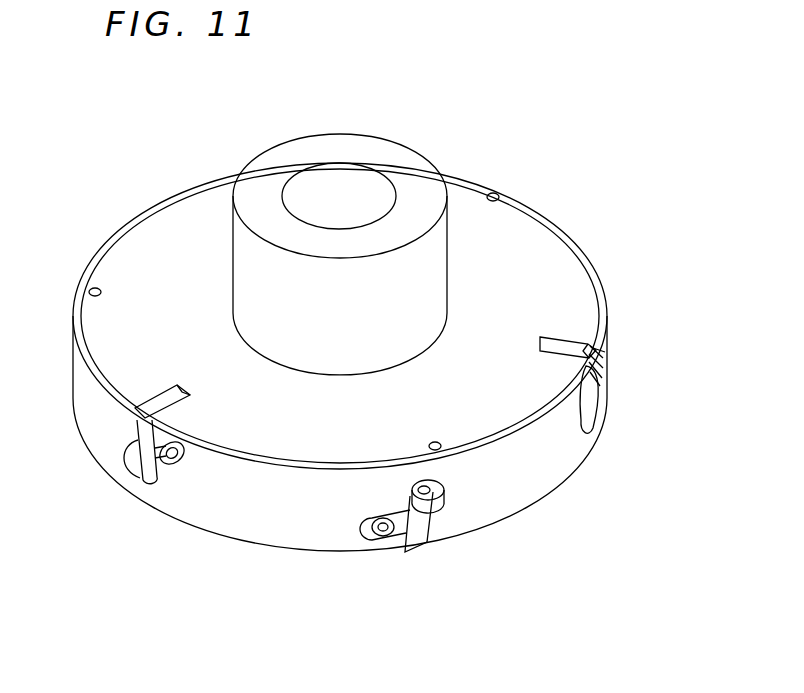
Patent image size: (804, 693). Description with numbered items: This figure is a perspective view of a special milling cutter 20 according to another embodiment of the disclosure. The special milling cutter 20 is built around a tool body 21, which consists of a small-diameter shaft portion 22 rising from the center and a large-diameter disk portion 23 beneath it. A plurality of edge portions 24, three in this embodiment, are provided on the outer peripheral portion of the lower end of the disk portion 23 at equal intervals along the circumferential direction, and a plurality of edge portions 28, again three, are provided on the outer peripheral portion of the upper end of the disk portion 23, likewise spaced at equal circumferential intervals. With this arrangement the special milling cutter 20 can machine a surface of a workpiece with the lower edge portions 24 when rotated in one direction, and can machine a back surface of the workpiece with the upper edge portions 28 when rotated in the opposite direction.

The special milling cutter 20 is at (102, 176).
The tool body 21 is at (579, 201).
The small-diameter shaft portion 22 is at (428, 178).
The large-diameter disk portion 23 is at (585, 285).
The edge portions 24 is at (427, 527).
The edge portions 28 is at (140, 420).